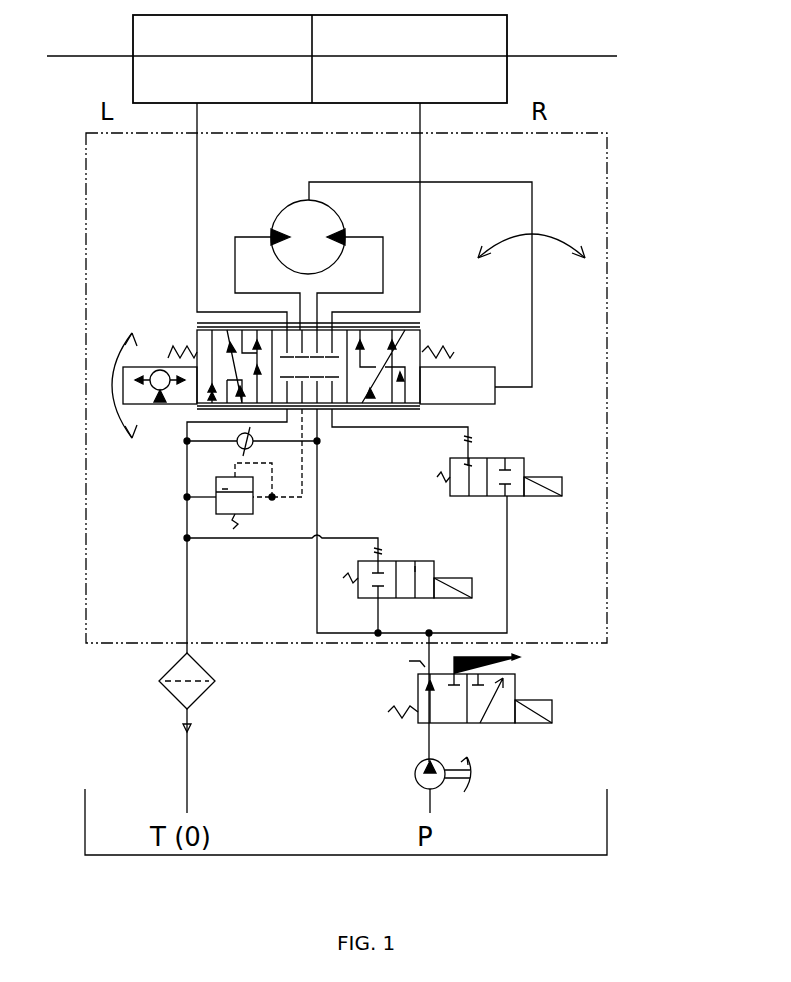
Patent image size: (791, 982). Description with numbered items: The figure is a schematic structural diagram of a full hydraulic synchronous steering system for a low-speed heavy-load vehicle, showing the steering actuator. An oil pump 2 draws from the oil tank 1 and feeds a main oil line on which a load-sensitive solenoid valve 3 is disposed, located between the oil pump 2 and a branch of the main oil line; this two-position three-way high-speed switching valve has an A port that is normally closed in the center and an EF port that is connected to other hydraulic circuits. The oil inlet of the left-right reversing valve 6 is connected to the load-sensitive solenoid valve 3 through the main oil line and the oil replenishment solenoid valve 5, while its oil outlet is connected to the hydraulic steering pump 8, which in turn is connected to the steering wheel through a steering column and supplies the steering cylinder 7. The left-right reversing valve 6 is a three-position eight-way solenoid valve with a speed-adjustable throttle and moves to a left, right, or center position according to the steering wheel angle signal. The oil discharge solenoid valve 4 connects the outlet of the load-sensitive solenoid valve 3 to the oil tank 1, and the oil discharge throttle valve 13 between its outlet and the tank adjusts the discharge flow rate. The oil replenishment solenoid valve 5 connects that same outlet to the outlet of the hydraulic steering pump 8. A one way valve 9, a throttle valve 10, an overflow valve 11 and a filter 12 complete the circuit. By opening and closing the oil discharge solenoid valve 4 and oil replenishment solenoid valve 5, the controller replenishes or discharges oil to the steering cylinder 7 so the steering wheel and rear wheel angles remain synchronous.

The oil tank 1 is at (607, 789).
The oil pump 2 is at (477, 773).
The load-sensitive solenoid valve 3 is at (552, 700).
The oil discharge solenoid valve 4 is at (472, 578).
The oil replenishment solenoid valve 5 is at (562, 477).
The left-right reversing valve 6 is at (495, 404).
The steering cylinder 7 is at (507, 15).
The hydraulic steering pump 8 is at (290, 217).
The one way valve 9 is at (236, 446).
The throttle valve 10 is at (302, 478).
The overflow valve 11 is at (215, 515).
The filter 12 is at (158, 681).
The oil discharge throttle valve 13 is at (381, 548).